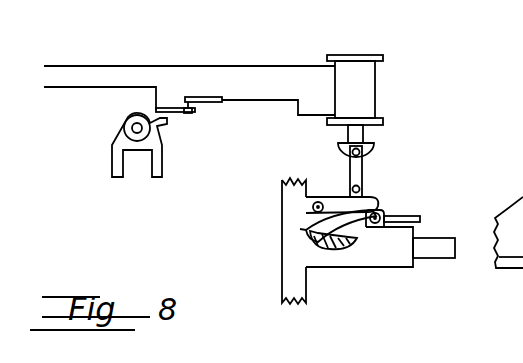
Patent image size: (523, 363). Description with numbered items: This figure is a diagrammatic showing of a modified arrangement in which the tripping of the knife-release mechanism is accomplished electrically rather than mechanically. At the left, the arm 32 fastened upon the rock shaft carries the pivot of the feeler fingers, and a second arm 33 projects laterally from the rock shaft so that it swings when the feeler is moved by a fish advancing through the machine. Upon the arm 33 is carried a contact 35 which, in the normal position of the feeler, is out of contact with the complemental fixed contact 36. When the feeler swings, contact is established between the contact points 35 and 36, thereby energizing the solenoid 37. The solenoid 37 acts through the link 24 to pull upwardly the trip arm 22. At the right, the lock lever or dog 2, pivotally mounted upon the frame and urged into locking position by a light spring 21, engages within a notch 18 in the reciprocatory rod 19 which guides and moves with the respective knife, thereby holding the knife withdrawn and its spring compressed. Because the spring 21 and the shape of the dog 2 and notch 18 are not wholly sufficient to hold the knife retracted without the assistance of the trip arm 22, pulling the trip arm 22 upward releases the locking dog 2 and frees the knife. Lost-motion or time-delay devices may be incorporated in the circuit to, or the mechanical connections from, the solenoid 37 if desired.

The lock lever 2 is at (412, 214).
The notch 18 is at (322, 249).
The reciprocatory rod 19 is at (433, 252).
The light spring 21 is at (410, 222).
The trip arm 22 is at (378, 198).
The link 24 is at (362, 169).
The arm 32 is at (114, 136).
The second arm 33 is at (163, 119).
The contact 35 is at (196, 113).
The fixed contact 36 is at (187, 101).
The solenoid 37 is at (367, 97).